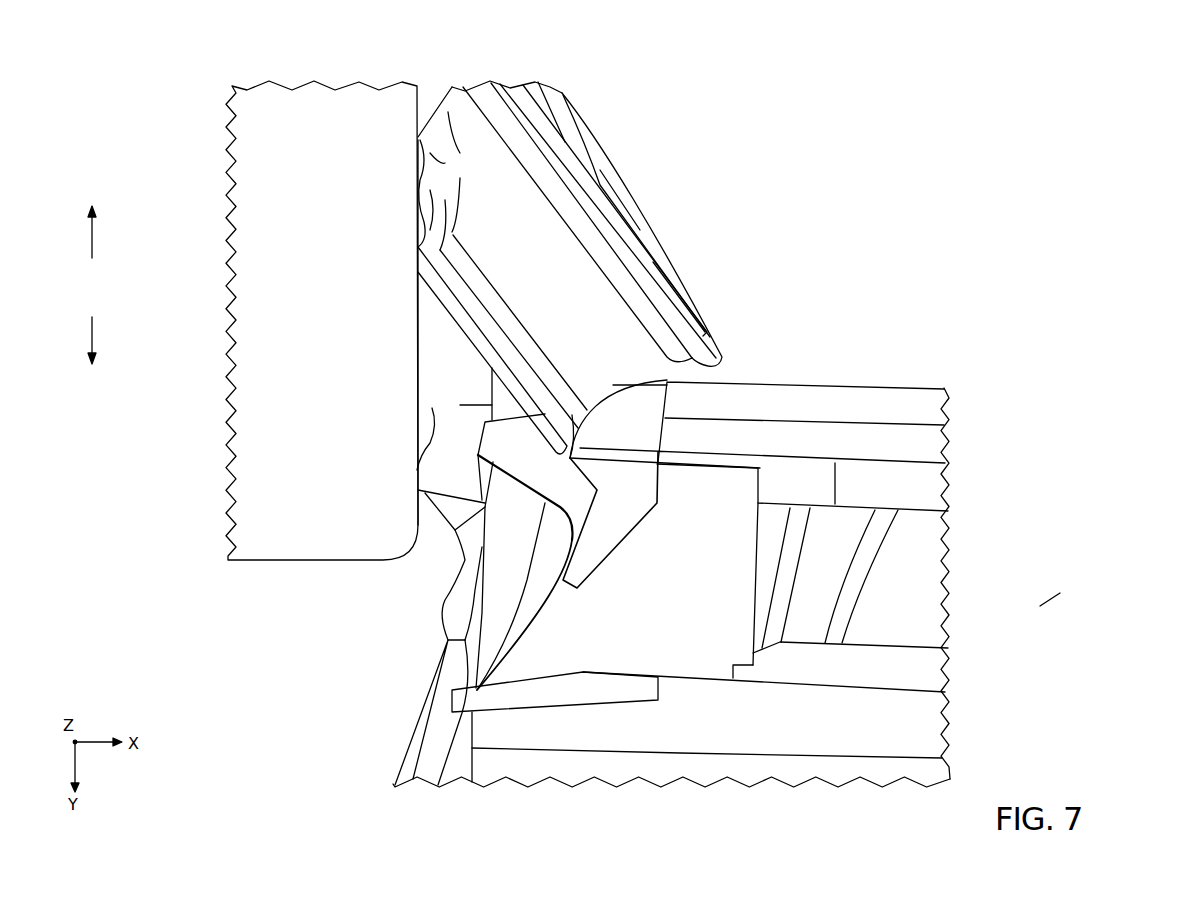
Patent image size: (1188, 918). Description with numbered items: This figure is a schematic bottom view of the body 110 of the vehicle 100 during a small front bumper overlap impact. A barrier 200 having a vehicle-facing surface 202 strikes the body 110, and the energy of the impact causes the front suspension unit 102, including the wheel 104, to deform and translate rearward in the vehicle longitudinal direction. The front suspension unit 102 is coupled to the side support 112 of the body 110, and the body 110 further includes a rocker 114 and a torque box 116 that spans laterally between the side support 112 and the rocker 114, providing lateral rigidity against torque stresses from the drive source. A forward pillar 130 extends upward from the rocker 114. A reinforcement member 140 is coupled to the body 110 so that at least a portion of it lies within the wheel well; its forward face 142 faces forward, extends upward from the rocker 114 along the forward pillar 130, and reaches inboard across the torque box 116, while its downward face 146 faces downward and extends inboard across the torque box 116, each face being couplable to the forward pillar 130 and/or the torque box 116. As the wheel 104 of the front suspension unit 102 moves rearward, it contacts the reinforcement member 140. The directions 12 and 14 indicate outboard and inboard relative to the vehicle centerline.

The direction 12 is at (92, 237).
The direction 14 is at (92, 332).
The vehicle 100 is at (1048, 603).
The front suspension unit 102 is at (637, 161).
The wheel 104 is at (583, 108).
The body 110 is at (958, 574).
The side support 112 is at (878, 765).
The rocker 114 is at (914, 383).
The torque box 116 is at (488, 629).
The forward pillar 130 is at (718, 376).
The reinforcement member 140 is at (557, 553).
The forward face 142 is at (570, 527).
The downward face 146 is at (622, 527).
The barrier 200 is at (300, 581).
The vehicle-facing surface 202 is at (418, 358).